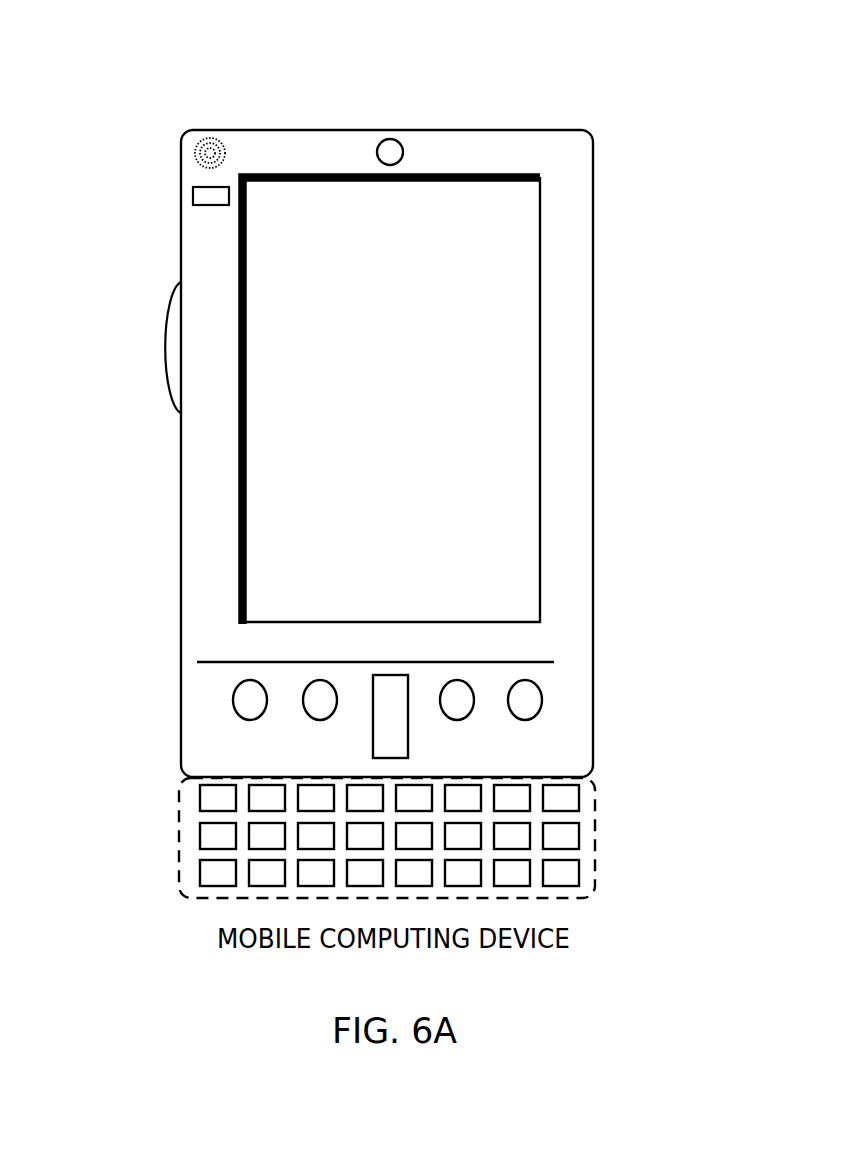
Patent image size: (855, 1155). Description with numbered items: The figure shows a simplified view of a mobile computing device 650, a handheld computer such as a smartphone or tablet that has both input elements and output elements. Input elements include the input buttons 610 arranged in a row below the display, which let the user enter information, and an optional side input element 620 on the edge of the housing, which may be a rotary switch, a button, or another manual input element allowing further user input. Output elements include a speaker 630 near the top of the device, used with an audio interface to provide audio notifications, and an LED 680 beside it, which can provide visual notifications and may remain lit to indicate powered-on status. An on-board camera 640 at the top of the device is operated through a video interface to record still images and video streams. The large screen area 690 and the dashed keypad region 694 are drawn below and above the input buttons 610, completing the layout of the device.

The input buttons 610 is at (528, 710).
The side input element 620 is at (157, 355).
The speaker 630 is at (194, 142).
The on-board camera 640 is at (400, 149).
The mobile computing device 650 is at (593, 147).
The LED 680 is at (193, 187).
The display screen 690 is at (267, 560).
The keyboard 694 is at (178, 867).